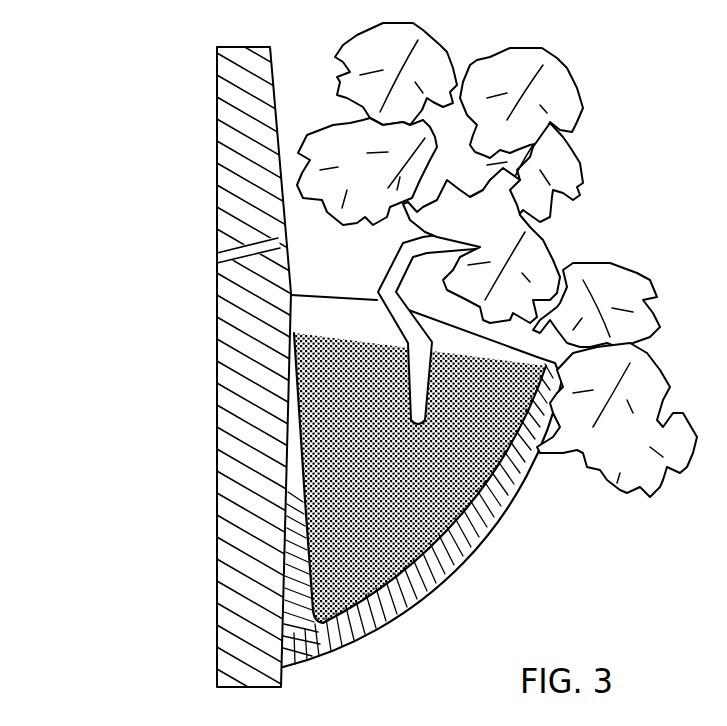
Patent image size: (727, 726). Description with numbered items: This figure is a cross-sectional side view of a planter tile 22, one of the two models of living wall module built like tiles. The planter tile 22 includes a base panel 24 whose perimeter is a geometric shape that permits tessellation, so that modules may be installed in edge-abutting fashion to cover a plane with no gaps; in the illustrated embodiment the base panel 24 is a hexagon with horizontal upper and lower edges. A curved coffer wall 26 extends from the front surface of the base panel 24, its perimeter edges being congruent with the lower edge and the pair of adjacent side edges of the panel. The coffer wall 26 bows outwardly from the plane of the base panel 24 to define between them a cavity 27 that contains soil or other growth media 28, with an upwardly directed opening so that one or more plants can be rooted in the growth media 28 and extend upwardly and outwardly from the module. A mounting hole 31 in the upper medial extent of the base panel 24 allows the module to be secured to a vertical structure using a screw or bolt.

The planter tile 22 is at (172, 428).
The base panel 24 is at (217, 110).
The coffer wall 26 is at (483, 527).
The cavity 27 is at (443, 572).
The growth media 28 is at (380, 627).
The mounting hole 31 is at (256, 260).